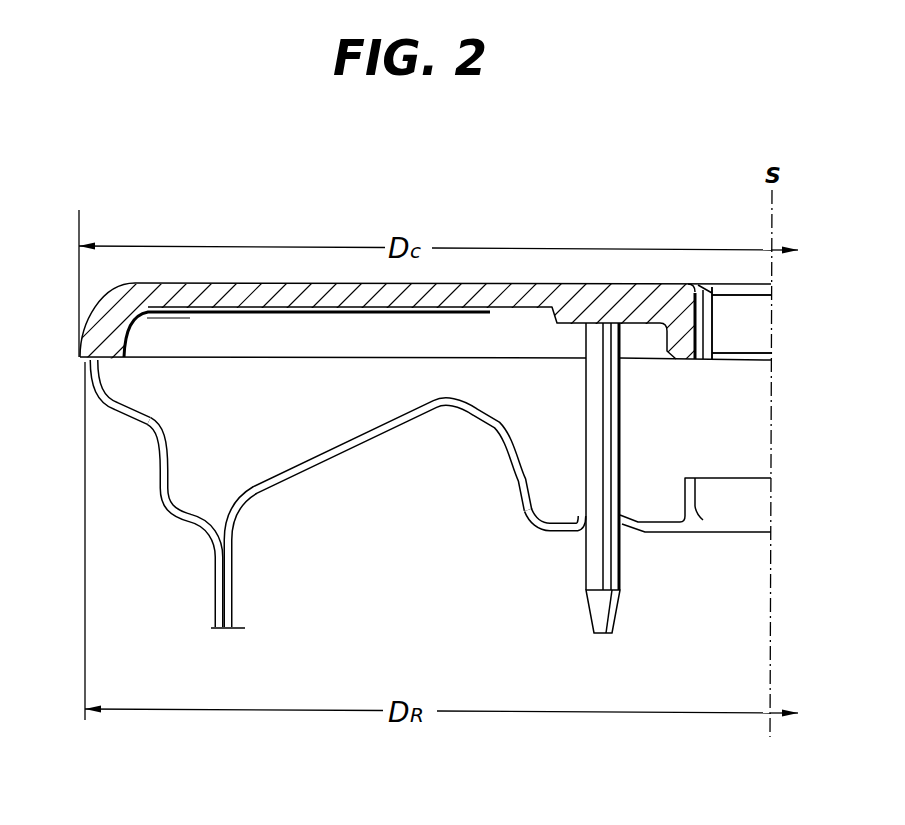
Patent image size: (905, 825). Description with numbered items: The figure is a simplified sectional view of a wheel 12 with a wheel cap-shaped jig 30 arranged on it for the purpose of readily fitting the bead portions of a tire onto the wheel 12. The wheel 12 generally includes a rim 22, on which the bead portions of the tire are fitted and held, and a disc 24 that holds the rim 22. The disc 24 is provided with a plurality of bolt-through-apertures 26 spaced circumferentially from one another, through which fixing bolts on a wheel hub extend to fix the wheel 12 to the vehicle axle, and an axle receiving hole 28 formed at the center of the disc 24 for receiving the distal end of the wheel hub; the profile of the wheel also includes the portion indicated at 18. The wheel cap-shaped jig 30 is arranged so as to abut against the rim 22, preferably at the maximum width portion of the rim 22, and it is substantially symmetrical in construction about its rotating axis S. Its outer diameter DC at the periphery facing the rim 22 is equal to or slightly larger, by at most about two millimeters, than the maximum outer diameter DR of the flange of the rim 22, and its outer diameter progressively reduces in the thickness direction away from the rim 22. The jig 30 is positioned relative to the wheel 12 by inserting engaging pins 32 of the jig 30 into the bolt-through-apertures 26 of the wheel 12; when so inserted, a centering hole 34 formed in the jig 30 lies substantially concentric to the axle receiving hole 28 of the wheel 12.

The wheel 12 is at (210, 586).
The bend of lead wire 18 is at (103, 392).
The rim 22 is at (160, 500).
The disc 24 is at (246, 514).
The bolt-through-apertures 26 is at (580, 528).
The axle receiving hole 28 is at (713, 515).
The wheel cap-shaped jig 30 is at (483, 281).
The engaging pins 32 is at (623, 580).
The centering hole 34 is at (735, 345).